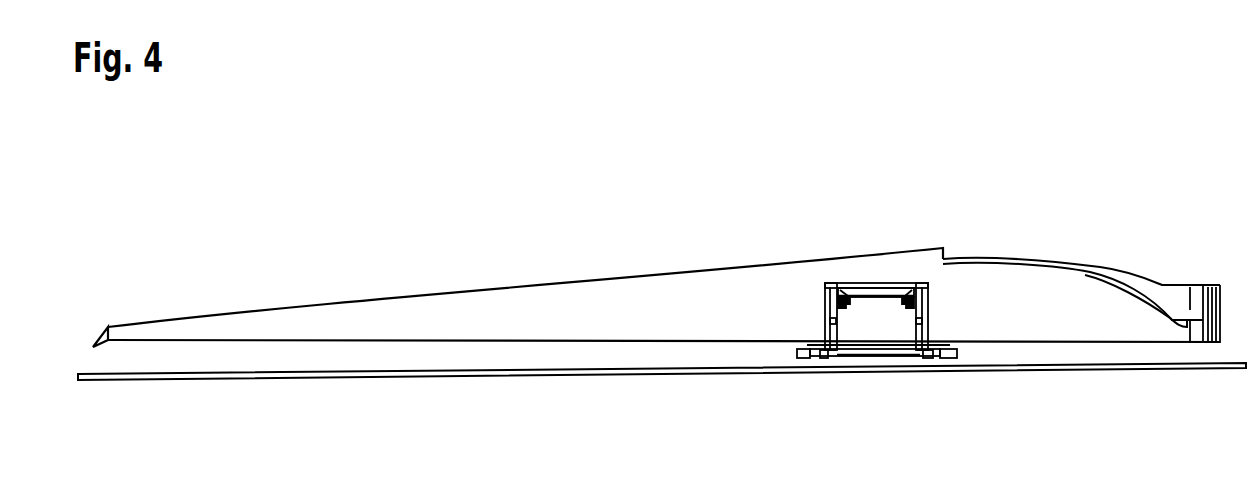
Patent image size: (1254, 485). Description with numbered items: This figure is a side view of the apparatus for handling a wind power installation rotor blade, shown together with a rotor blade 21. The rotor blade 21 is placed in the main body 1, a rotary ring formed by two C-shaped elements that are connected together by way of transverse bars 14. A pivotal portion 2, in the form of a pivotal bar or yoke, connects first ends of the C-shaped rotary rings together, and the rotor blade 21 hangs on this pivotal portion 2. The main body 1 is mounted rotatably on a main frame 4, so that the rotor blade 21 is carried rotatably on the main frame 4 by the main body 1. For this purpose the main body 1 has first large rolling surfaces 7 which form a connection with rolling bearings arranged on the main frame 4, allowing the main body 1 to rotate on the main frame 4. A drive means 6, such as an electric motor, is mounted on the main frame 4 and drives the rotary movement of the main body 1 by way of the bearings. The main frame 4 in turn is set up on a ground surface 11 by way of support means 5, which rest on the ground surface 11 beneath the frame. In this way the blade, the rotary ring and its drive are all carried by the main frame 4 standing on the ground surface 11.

The main body 1 is at (825, 303).
The pivotal portion 2 is at (848, 283).
The transverse bars 14 is at (882, 288).
The rotor blade 21 is at (995, 277).
The main frame 4 is at (878, 356).
The support means 5 is at (807, 358).
The drive means 6 is at (802, 362).
The first rolling surfaces 7 is at (832, 356).
The ground surface 11 is at (1217, 368).